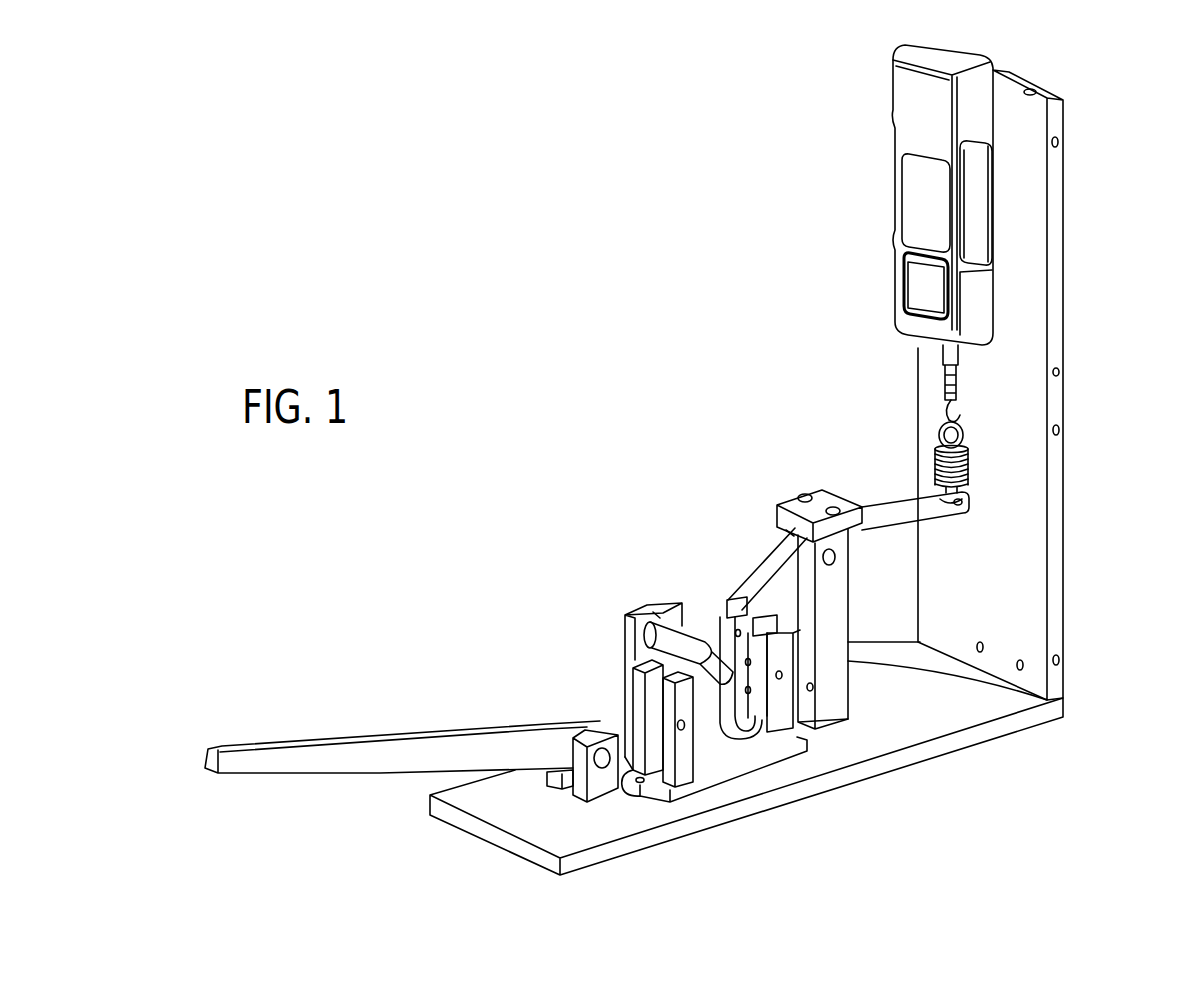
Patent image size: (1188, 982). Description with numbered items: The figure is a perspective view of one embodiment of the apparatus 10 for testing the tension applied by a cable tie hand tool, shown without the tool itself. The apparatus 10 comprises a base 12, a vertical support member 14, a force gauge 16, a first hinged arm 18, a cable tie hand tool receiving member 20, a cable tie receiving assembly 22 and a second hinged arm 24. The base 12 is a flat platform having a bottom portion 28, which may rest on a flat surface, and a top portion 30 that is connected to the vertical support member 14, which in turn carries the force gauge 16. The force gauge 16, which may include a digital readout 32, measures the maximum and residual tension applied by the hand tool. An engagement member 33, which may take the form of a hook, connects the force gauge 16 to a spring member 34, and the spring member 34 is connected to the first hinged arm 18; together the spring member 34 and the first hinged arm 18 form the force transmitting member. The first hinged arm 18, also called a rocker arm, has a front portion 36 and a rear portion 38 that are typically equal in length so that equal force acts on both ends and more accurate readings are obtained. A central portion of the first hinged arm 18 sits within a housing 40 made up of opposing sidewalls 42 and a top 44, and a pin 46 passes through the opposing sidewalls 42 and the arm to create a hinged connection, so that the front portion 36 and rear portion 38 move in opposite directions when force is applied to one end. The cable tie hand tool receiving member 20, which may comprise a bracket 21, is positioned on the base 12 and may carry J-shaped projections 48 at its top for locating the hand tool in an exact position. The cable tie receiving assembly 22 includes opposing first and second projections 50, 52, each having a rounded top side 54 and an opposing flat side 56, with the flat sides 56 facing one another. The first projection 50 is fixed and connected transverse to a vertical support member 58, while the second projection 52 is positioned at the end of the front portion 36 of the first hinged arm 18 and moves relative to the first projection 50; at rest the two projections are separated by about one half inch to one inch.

The apparatus 10 is at (578, 241).
The base 12 is at (925, 755).
The vertical support member 14 is at (1028, 238).
The force gauge 16 is at (869, 222).
The first hinged arm 18 is at (877, 528).
The cable tie hand tool receiving member 20 is at (747, 750).
The bracket 21 is at (680, 742).
The cable tie receiving assembly 22 is at (702, 610).
The second hinged arm 24 is at (285, 743).
The bottom portion 28 is at (537, 866).
The top portion 30 is at (528, 827).
The digital readout 32 is at (915, 290).
The engagement member 33 is at (958, 422).
The spring member 34 is at (963, 475).
The front portion 36 is at (760, 570).
The rear portion 38 is at (920, 495).
The housing 40 is at (979, 629).
The opposing sidewalls 42 is at (773, 530).
The top 44 is at (813, 493).
The pin 46 is at (847, 556).
The J-shaped projections 48 is at (900, 660).
The first projection 50 is at (670, 633).
The second projection 52 is at (705, 740).
The rounded top side 54 is at (660, 618).
The flat side 56 is at (780, 710).
The vertical support member 58 is at (670, 600).